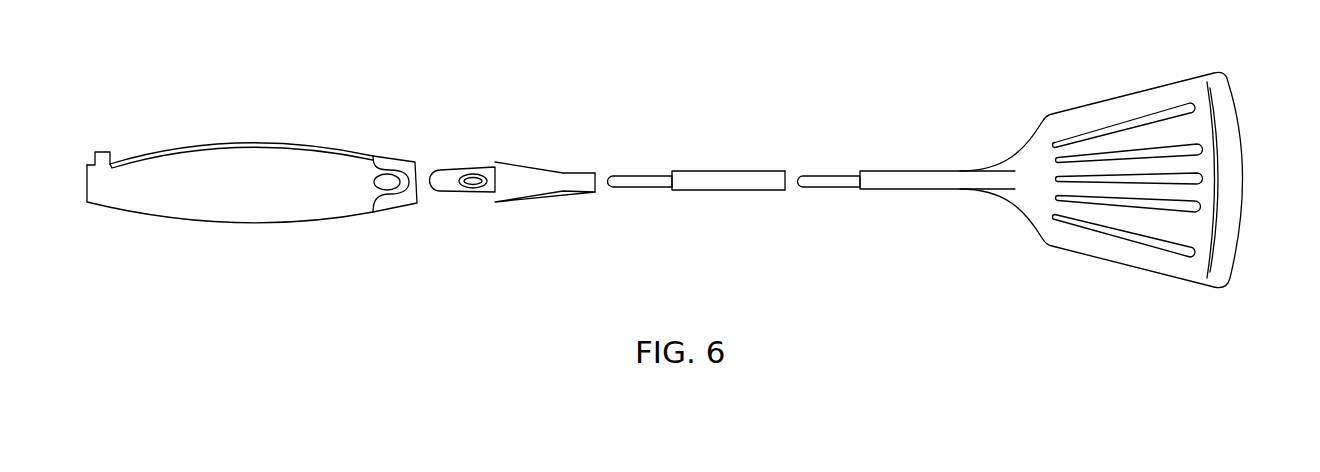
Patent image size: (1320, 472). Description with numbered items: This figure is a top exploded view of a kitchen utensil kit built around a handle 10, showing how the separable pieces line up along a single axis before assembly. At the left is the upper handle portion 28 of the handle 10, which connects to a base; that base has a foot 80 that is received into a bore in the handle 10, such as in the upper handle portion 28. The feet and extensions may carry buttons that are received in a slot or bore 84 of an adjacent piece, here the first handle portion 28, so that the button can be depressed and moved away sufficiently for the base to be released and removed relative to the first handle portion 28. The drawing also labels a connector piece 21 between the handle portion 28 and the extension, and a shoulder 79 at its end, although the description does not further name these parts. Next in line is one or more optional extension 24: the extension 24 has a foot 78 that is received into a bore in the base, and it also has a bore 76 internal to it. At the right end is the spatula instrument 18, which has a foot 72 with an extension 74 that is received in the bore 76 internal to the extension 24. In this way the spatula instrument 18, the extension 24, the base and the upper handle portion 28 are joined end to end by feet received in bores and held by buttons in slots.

The handle 10 is at (252, 197).
The upper handle portion 28 is at (188, 210).
The slot or bore 84 is at (395, 187).
The foot 80 is at (455, 167).
The connector 21 is at (527, 187).
The connector shoulder 79 is at (595, 187).
The foot 78 is at (650, 180).
The extension 24 is at (741, 148).
The bore 76 is at (791, 176).
The extension 74 is at (830, 183).
The foot 72 is at (932, 180).
The spatula instrument 18 is at (1254, 134).